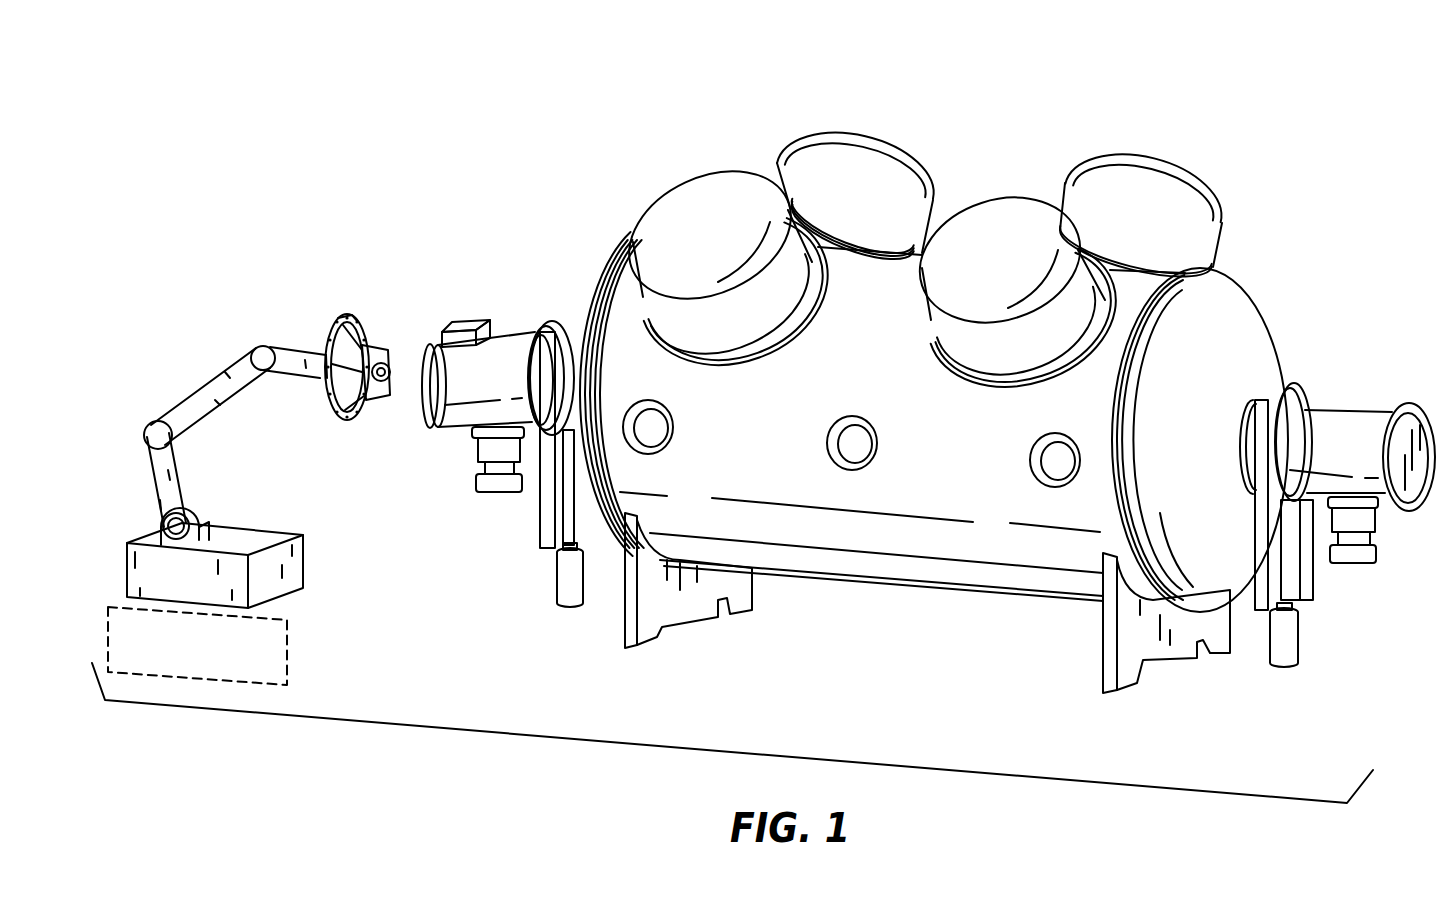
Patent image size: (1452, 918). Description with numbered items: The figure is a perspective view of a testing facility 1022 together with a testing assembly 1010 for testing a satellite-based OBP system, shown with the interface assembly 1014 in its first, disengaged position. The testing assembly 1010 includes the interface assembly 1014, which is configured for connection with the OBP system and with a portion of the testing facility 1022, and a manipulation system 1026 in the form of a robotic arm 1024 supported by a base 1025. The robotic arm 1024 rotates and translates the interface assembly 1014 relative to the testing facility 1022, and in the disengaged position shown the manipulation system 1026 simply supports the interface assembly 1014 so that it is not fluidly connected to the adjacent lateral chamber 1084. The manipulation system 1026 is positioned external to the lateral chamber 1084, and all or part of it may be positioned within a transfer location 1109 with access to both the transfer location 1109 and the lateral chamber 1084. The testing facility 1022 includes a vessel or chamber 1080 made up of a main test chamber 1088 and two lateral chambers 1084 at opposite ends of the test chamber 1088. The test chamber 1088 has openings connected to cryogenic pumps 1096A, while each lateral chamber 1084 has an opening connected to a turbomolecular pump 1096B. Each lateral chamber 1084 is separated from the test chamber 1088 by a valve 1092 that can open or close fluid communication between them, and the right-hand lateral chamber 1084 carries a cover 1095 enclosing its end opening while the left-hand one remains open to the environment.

The testing assembly 1010 is at (506, 105).
The testing facility 1022 is at (919, 375).
The interface assembly 1014 is at (380, 293).
The robotic arm 1024 is at (188, 398).
The base 1025 is at (290, 567).
The manipulation system 1026 is at (253, 443).
The transfer location 1109 is at (298, 667).
The lateral chamber 1084 is at (930, 384).
The cover 1095 is at (1427, 440).
The cryogenic pump 1096A is at (830, 138).
The turbomolecular pump 1096B is at (485, 447).
The valve 1092 is at (565, 588).
The main test chamber 1088 is at (813, 553).
The chamber 1080 is at (980, 543).